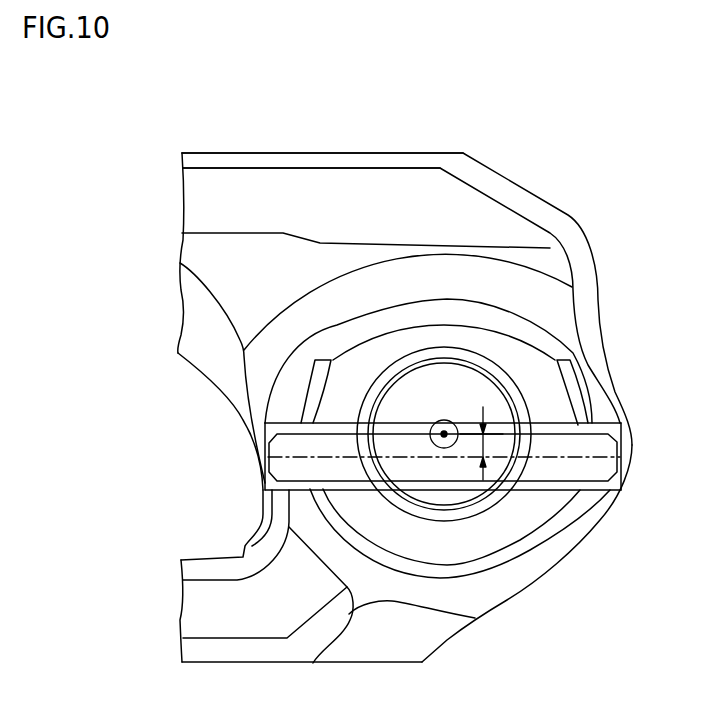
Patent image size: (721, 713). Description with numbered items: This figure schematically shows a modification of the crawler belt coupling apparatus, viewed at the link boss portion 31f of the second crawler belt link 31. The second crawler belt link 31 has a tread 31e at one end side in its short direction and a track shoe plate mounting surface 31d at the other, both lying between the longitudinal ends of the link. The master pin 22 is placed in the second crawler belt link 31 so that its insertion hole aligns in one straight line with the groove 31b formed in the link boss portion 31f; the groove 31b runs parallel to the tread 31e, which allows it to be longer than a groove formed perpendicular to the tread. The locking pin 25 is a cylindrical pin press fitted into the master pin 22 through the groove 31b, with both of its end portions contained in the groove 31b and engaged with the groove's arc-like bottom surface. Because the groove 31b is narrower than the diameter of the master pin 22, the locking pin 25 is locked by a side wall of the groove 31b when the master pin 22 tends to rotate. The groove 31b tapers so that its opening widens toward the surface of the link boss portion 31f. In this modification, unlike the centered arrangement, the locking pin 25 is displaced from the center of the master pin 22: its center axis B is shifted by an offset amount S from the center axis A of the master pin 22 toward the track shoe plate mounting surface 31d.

The second crawler belt link 31 is at (417, 203).
The tread 31e is at (330, 153).
The track shoe plate mounting surface 31d is at (350, 663).
The link boss portion 31f is at (510, 362).
The groove 31b is at (586, 428).
The master pin 22 is at (462, 393).
The locking pin 25 is at (597, 474).
The center axis of master pin A is at (444, 434).
The center axis of locking pin B is at (595, 450).
The offset amount S is at (489, 443).